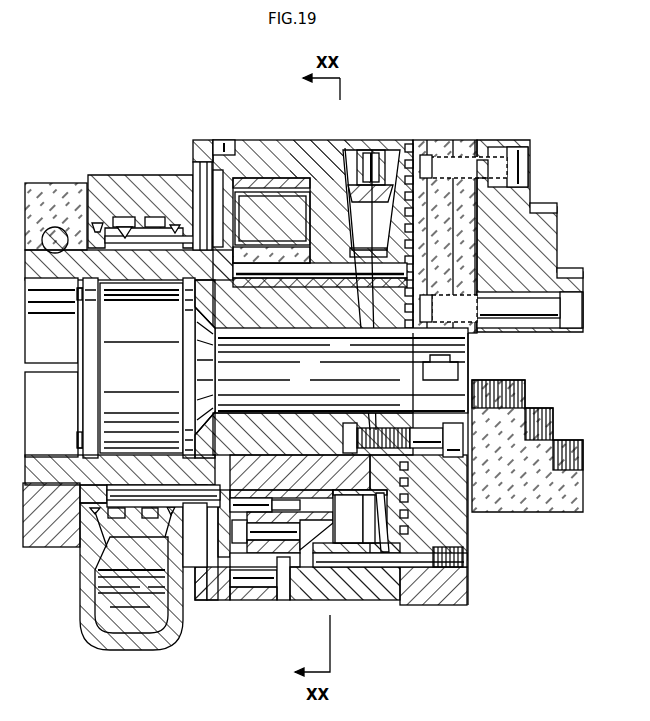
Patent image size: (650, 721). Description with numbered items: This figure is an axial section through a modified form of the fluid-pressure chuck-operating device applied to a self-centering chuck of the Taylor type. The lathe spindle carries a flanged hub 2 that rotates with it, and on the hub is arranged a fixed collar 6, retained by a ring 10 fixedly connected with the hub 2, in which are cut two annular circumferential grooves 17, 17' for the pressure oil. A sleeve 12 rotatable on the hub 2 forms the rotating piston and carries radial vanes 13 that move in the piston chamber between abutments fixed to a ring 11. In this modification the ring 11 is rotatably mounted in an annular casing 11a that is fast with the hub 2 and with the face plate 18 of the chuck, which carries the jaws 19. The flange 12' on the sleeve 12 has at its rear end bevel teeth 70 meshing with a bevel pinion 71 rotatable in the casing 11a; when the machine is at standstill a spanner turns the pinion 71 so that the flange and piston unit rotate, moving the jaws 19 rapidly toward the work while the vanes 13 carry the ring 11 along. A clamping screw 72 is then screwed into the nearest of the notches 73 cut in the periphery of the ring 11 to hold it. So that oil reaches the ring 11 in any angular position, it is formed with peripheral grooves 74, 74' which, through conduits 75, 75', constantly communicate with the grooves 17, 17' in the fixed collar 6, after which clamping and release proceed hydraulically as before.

The flanged hub 2 is at (288, 318).
The fixed collar 6 is at (118, 175).
The ring 10 is at (43, 190).
The ring 11 is at (323, 195).
The annular casing 11a is at (310, 148).
The sleeve 12 is at (346, 443).
The flange 12' is at (445, 236).
The radial vanes 13 is at (270, 215).
The annular circumferential groove 17 is at (135, 387).
The annular circumferential groove 17' is at (121, 187).
The face plate 18 is at (462, 596).
The jaws 19 is at (543, 232).
The bevel teeth 70 is at (378, 520).
The bevel pinion 71 is at (375, 160).
The clamping screw 72 is at (355, 595).
The notches 73 is at (314, 577).
The peripheral groove 74 is at (266, 577).
The peripheral groove 74' is at (310, 198).
The conduit 75 is at (265, 566).
The conduit 75' is at (194, 189).